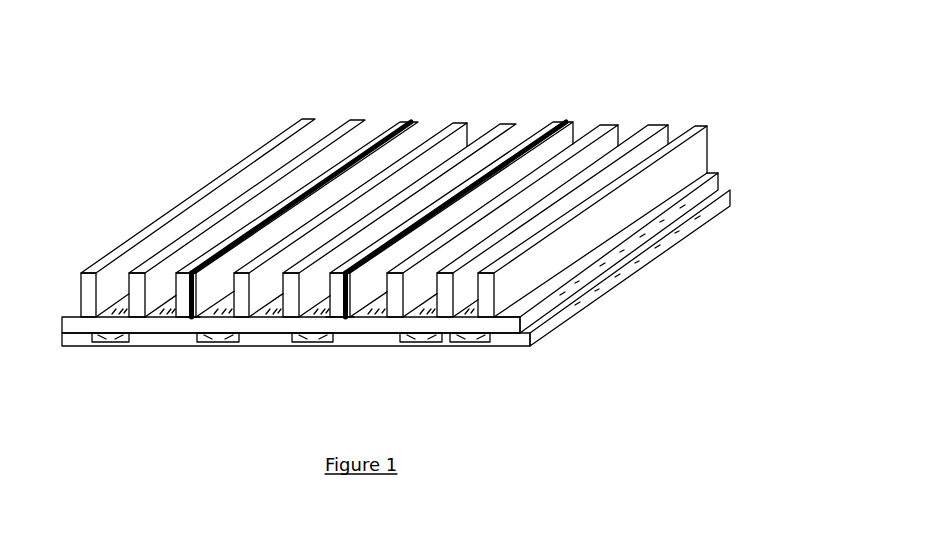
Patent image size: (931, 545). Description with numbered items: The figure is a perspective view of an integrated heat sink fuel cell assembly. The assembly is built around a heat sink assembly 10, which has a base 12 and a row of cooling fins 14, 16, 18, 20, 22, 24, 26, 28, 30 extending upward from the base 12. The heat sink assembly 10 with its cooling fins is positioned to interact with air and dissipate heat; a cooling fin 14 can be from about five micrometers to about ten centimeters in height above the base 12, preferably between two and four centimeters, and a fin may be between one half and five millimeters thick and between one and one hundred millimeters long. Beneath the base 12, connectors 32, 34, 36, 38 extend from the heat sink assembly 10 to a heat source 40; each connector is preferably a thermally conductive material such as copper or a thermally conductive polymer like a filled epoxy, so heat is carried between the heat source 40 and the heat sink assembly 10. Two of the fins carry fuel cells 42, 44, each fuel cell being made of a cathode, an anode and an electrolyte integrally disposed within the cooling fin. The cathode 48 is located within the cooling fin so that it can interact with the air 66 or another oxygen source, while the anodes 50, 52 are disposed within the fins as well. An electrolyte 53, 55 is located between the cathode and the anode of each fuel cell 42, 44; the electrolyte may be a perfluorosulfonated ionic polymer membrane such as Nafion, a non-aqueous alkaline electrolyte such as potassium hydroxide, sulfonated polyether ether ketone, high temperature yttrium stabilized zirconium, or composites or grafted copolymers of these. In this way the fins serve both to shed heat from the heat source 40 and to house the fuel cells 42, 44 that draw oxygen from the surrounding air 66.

The heat sink assembly 10 is at (773, 198).
The base 12 is at (70, 325).
The cooling fin 14 is at (315, 118).
The cooling fin 16 is at (361, 118).
The cooling fin 18 is at (398, 120).
The cooling fin 20 is at (463, 128).
The cooling fin 22 is at (508, 128).
The cooling fin 24 is at (578, 123).
The cooling fin 26 is at (613, 123).
The cooling fin 28 is at (665, 123).
The cooling fin 30 is at (705, 125).
The connector 32 is at (112, 342).
The connector 34 is at (226, 342).
The connector 36 is at (315, 342).
The connector 38 is at (408, 342).
The heat source 40 is at (497, 341).
The fuel cell 42 is at (415, 122).
The fuel cell 44 is at (560, 122).
The cathode 48 is at (329, 317).
The anode 50 is at (198, 317).
The anode 52 is at (342, 318).
The electrolyte 53 is at (190, 320).
The electrolyte 55 is at (350, 316).
The air 66 is at (362, 137).